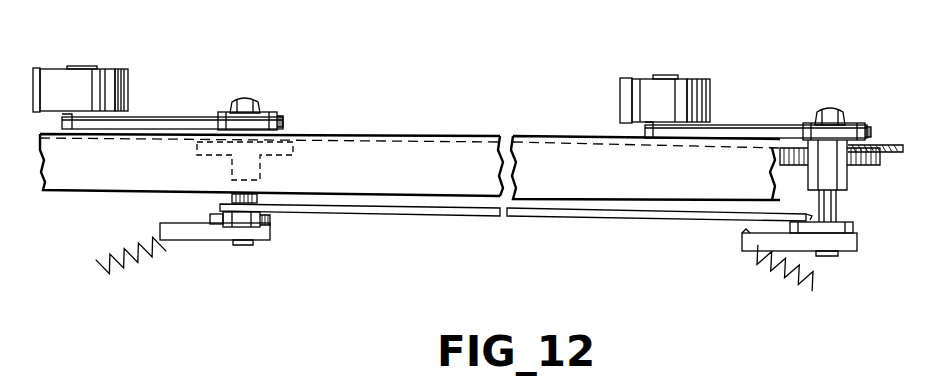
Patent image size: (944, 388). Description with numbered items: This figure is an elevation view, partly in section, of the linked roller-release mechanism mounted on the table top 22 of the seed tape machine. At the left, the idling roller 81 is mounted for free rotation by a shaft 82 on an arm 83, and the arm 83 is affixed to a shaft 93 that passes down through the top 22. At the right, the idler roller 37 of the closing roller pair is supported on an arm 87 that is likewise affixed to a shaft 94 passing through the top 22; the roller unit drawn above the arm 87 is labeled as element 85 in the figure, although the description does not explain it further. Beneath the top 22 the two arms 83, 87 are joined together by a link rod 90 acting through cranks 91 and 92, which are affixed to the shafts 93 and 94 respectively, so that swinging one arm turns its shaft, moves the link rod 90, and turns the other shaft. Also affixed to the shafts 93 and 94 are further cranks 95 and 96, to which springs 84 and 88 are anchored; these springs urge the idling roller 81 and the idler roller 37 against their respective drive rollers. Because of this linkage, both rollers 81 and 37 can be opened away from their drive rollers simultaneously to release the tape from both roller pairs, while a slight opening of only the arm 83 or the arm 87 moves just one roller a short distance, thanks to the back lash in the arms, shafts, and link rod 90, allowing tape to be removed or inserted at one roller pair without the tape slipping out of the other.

The top 22 is at (385, 143).
The idler roller 37 is at (620, 95).
The idling roller 81 is at (128, 85).
The shaft 82 is at (88, 67).
The arm 83 is at (165, 118).
The spring 84 is at (109, 272).
The solenoid 85 is at (668, 77).
The arm 87 is at (748, 130).
The spring 88 is at (815, 286).
The link rod 90 is at (450, 216).
The crank 91 is at (270, 221).
The crank 92 is at (850, 229).
The shaft 93 is at (232, 198).
The shaft 94 is at (832, 206).
The crank 95 is at (185, 230).
The crank 96 is at (750, 251).